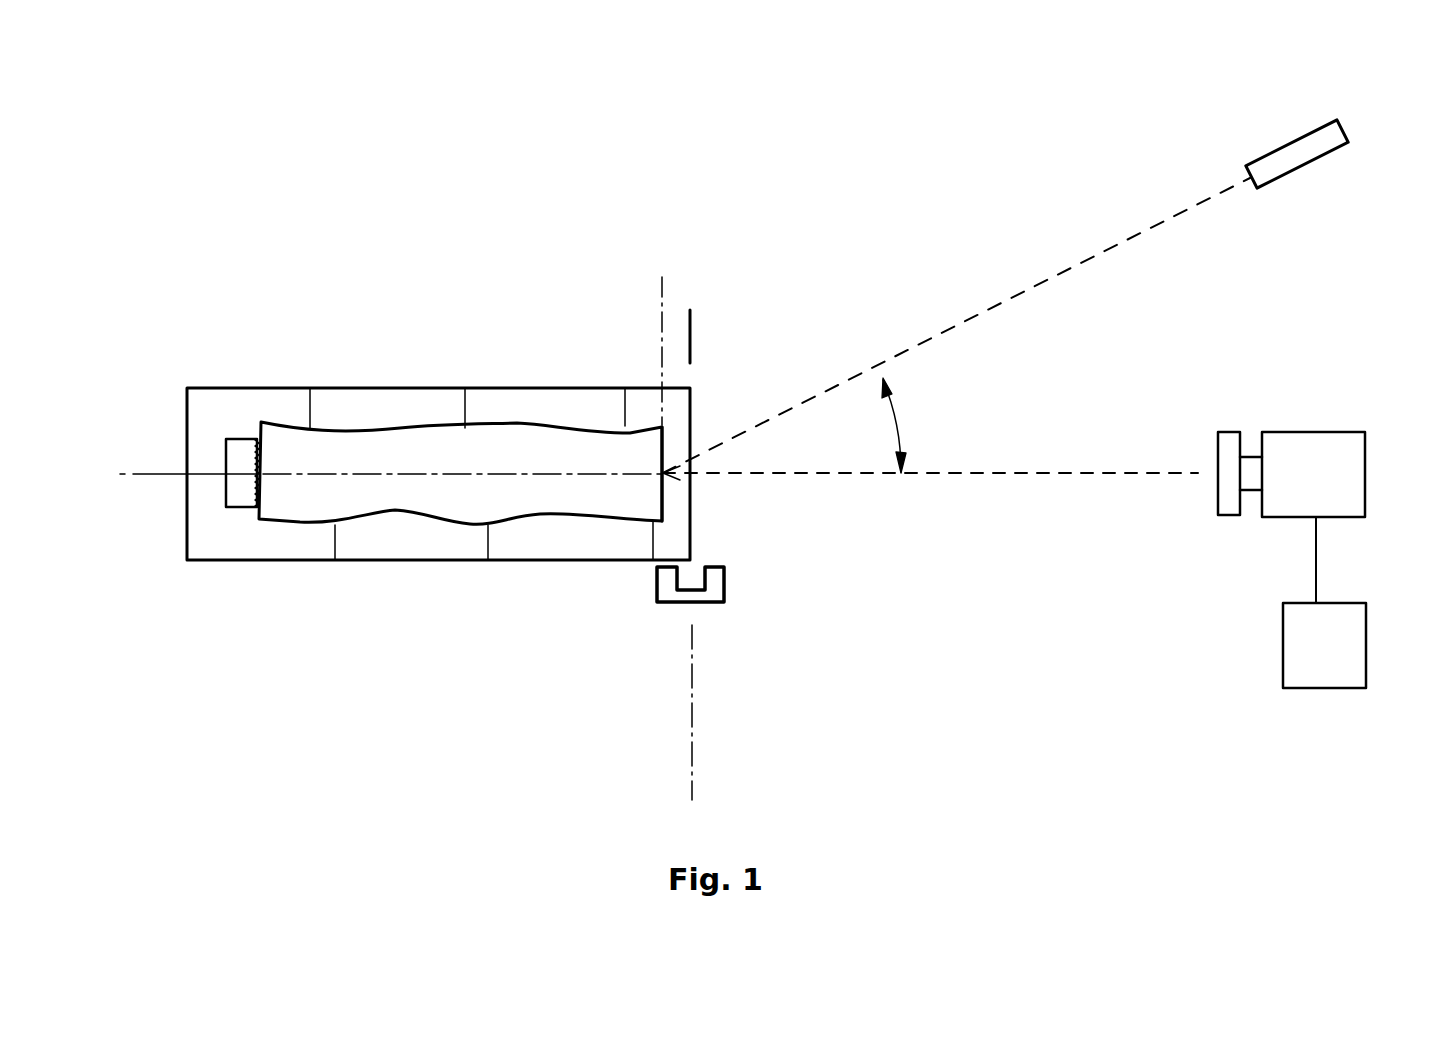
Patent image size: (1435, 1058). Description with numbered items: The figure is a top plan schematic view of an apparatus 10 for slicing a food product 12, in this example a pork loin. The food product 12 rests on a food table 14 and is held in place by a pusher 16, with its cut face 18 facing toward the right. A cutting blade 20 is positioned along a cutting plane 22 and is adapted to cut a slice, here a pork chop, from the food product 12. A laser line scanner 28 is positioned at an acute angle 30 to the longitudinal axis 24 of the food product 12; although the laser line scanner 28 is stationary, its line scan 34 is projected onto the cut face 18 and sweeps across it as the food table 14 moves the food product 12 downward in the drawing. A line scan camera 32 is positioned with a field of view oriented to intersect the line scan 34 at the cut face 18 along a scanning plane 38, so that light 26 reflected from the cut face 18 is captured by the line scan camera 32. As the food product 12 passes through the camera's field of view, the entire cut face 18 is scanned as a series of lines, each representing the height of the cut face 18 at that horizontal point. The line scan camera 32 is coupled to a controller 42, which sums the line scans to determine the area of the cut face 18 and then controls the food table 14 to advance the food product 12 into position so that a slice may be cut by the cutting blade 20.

The apparatus 10 is at (770, 167).
The food product 12 is at (456, 487).
The food table 14 is at (381, 388).
The pusher 16 is at (237, 460).
The cut face 18 is at (663, 500).
The cutting blade 20 is at (690, 335).
The cutting plane 22 is at (693, 750).
The longitudinal axis 24 is at (150, 477).
The light 26 is at (1007, 475).
The laser line scanner 28 is at (1300, 140).
The acute angle 30 is at (897, 418).
The line scan camera 32 is at (1315, 432).
The line scan 34 is at (1042, 280).
The scanning plane 38 is at (661, 323).
The controller 42 is at (1366, 647).